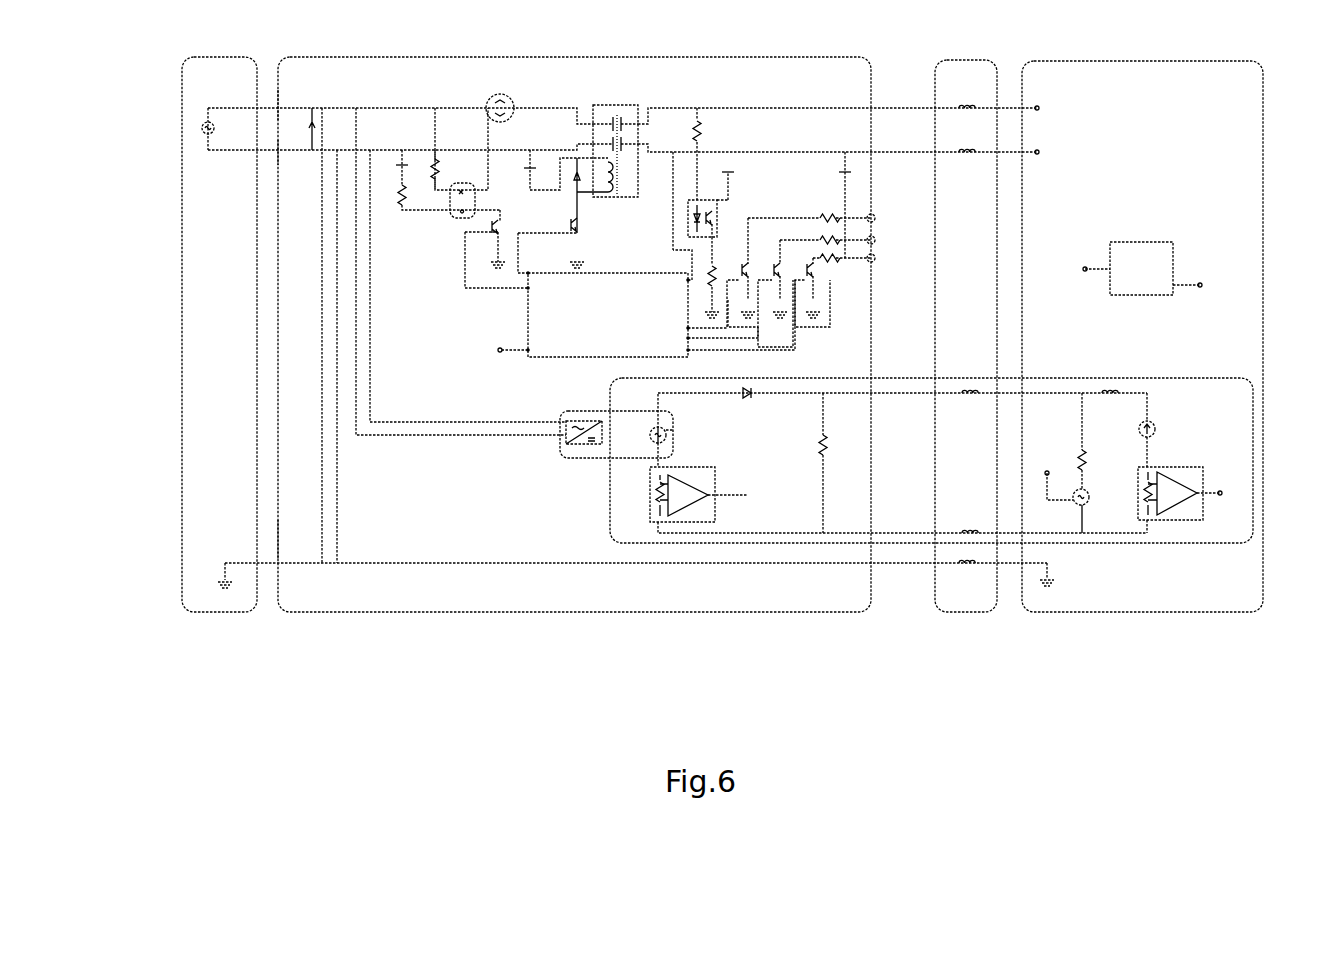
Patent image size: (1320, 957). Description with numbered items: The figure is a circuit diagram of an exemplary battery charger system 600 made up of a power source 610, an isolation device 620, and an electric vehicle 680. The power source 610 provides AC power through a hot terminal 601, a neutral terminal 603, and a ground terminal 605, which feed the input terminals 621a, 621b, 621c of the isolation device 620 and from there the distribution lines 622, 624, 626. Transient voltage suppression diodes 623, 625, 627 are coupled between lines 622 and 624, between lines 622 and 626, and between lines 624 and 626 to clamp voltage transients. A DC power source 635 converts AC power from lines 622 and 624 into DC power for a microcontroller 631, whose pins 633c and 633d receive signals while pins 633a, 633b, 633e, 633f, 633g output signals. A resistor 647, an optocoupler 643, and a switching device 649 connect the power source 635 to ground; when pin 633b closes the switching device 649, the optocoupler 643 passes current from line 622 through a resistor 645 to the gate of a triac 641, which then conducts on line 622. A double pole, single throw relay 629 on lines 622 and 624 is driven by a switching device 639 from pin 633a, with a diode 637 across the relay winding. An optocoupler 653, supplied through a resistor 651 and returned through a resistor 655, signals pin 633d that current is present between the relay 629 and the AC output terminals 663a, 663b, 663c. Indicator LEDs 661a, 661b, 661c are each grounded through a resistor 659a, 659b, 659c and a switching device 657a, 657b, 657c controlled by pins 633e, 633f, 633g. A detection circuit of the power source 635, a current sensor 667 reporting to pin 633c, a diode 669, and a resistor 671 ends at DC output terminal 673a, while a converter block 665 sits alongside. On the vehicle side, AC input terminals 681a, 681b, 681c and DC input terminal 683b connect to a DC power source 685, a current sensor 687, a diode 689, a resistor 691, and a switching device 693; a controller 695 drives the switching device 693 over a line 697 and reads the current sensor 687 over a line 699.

The battery charger system 600 is at (590, 668).
The hot terminal 601 is at (208, 108).
The neutral terminal 603 is at (208, 150).
The ground terminal 605 is at (225, 575).
The power source 610 is at (228, 612).
The isolation device 620 is at (480, 612).
The input terminal 621a is at (278, 100).
The input terminal 621b is at (278, 150).
The input terminal 621c is at (278, 546).
The distribution line 622 is at (377, 108).
The transient voltage suppression diode 623 is at (312, 125).
The distribution line 624 is at (430, 134).
The transient voltage suppression diode 625 is at (322, 435).
The distribution line 626 is at (520, 563).
The transient voltage suppression diode 627 is at (337, 475).
The double pole, single throw relay 629 is at (615, 105).
The microcontroller 631 is at (545, 357).
The pin 633a is at (528, 273).
The pin 633b is at (528, 288).
The pin 633c is at (528, 352).
The pin 633d is at (688, 280).
The pin 633e is at (688, 328).
The pin 633f is at (688, 338).
The pin 633g is at (688, 352).
The DC power source 635 is at (402, 164).
The diode 637 is at (608, 192).
The switching device 639 is at (572, 224).
The triac 641 is at (496, 96).
The optocoupler 643 is at (462, 218).
The resistor 645 is at (439, 168).
The resistor 647 is at (402, 207).
The switching device 649 is at (501, 220).
The resistor 651 is at (697, 131).
The optocoupler 653 is at (718, 215).
The resistor 655 is at (712, 275).
The switching device 657a is at (748, 263).
The switching device 657b is at (788, 308).
The switching device 657c is at (815, 288).
The resistor 659a is at (828, 218).
The resistor 659b is at (828, 240).
The resistor 659c is at (828, 258).
The indicator LED 661a is at (874, 216).
The indicator LED 661b is at (874, 238).
The indicator LED 661c is at (874, 260).
The AC output terminal 663a is at (965, 106).
The AC output terminal 663b is at (965, 150).
The AC output terminal 663c is at (965, 565).
The power converter 665 is at (585, 458).
The current sensor 667 is at (693, 522).
The diode 669 is at (747, 400).
The resistor 671 is at (822, 445).
The DC output terminal 673a is at (965, 392).
The electric vehicle 680 is at (1140, 612).
The AC input terminal 681a is at (972, 106).
The AC input terminal 681b is at (972, 150).
The AC input terminal 681c is at (973, 564).
The DC input terminal 683b is at (985, 374).
The DC power source 685 is at (1155, 429).
The current sensor 687 is at (1170, 520).
The diode 689 is at (1112, 392).
The resistor 691 is at (1083, 461).
The switching device 693 is at (1081, 506).
The controller 695 is at (1141, 242).
The line 697 is at (1047, 472).
The line 699 is at (1220, 493).